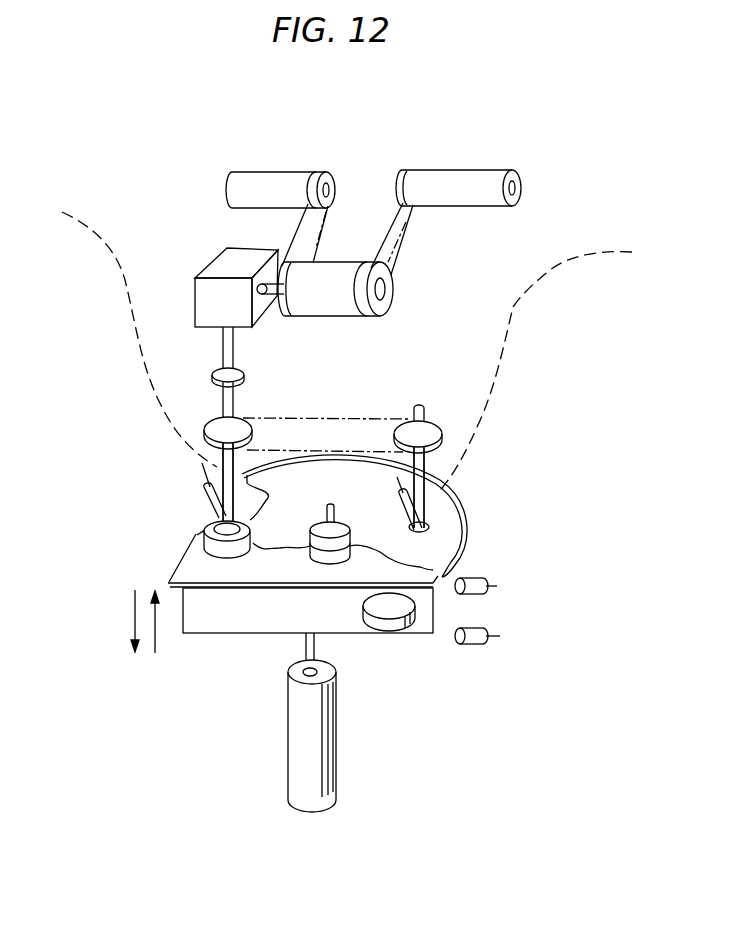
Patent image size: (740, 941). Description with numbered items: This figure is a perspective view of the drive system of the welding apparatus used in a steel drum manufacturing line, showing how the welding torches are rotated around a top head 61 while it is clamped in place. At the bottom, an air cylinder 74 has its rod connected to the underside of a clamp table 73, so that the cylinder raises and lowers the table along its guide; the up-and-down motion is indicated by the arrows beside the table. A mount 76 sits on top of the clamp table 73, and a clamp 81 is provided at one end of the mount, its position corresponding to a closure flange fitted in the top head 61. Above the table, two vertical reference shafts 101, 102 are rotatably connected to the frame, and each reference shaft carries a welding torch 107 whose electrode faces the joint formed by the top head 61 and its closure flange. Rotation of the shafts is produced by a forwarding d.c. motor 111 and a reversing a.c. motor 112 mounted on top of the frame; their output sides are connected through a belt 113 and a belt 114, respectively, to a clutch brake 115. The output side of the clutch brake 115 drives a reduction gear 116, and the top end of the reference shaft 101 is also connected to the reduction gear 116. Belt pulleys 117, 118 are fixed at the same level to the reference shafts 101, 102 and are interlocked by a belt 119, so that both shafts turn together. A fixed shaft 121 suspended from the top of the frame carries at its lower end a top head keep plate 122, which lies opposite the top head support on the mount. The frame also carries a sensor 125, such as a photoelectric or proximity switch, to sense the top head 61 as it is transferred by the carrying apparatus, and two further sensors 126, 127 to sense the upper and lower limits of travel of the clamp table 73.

The top head 61 is at (453, 542).
The clamp table 73 is at (347, 622).
The air cylinder 74 is at (298, 746).
The mount 76 is at (230, 590).
The clamp 81 is at (210, 550).
The reference shaft 101 is at (230, 402).
The reference shaft 102 is at (425, 409).
The welding torch 107 is at (207, 505).
The forwarding d.c. motor 111 is at (270, 178).
The reversing a.c. motor 112 is at (468, 182).
The belt 113 is at (327, 227).
The belt 114 is at (407, 228).
The clutch brake 115 is at (388, 306).
The reduction gear 116 is at (223, 260).
The belt pulley 117 is at (250, 433).
The belt pulley 118 is at (403, 439).
The belt 119 is at (347, 422).
The fixed shaft 121 is at (331, 512).
The top head keep plate 122 is at (315, 553).
The sensor 125 is at (393, 627).
The sensor 126 is at (480, 641).
The sensor 127 is at (478, 591).